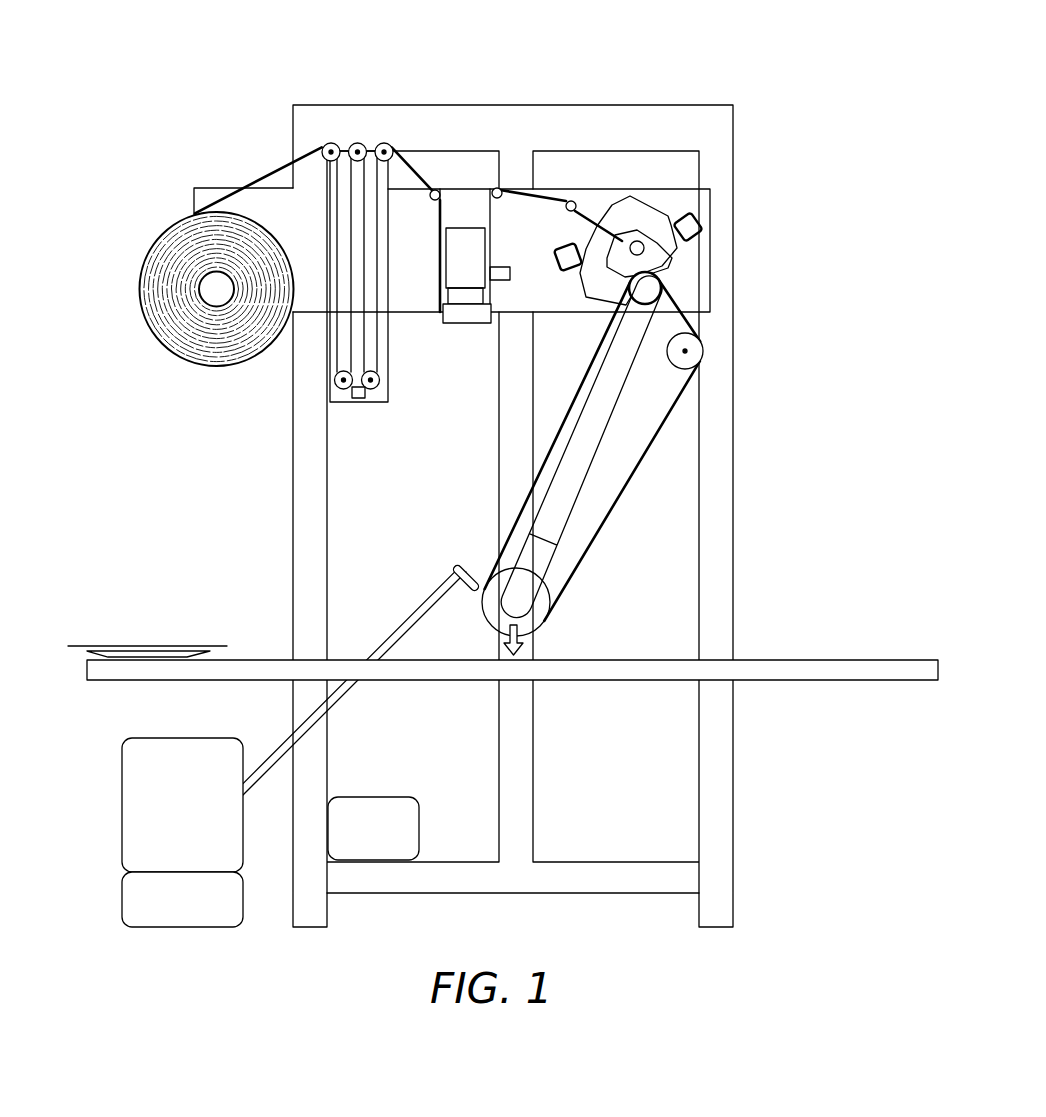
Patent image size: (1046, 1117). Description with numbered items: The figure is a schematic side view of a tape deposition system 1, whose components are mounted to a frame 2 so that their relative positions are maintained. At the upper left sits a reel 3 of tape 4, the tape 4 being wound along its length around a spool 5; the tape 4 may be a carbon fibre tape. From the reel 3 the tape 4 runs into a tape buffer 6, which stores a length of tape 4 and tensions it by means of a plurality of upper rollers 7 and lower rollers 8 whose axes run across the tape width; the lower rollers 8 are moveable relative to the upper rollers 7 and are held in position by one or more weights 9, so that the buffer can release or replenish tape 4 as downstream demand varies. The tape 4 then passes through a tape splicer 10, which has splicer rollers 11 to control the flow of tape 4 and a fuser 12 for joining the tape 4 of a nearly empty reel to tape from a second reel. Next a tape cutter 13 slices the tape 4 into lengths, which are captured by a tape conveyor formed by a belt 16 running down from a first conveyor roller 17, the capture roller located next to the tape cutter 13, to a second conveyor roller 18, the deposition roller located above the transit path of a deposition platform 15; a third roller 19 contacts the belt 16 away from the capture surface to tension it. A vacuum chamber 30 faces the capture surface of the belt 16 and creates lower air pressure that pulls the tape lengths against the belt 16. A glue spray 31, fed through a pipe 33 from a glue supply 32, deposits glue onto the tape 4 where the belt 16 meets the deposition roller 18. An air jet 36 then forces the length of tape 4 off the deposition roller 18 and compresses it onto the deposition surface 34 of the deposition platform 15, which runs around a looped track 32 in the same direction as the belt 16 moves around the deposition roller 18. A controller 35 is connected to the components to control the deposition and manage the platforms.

The tape deposition system 1 is at (146, 58).
The frame 2 is at (594, 112).
The reel 3 is at (196, 308).
The tape 4 is at (274, 170).
The spool 5 is at (146, 290).
The tape buffer 6 is at (348, 260).
The upper rollers 7 is at (384, 143).
The lower rollers 8 is at (334, 380).
The weights 9 is at (357, 400).
The tape splicer 10 is at (489, 272).
The splicer rollers 11 is at (448, 323).
The fuser 12 is at (505, 267).
The tape cutter 13 is at (661, 199).
The deposition platform 15 is at (144, 613).
The belt 16 is at (611, 457).
The first conveyor roller 17 is at (661, 278).
The second conveyor roller 18 is at (535, 615).
The third roller 19 is at (704, 351).
The vacuum chamber 30 is at (587, 466).
The glue spray 31 is at (456, 563).
The glue supply 32 is at (912, 656).
The pipe 33 is at (357, 655).
The deposition surface 34 is at (197, 650).
The controller 35 is at (393, 797).
The air jet 36 is at (500, 650).